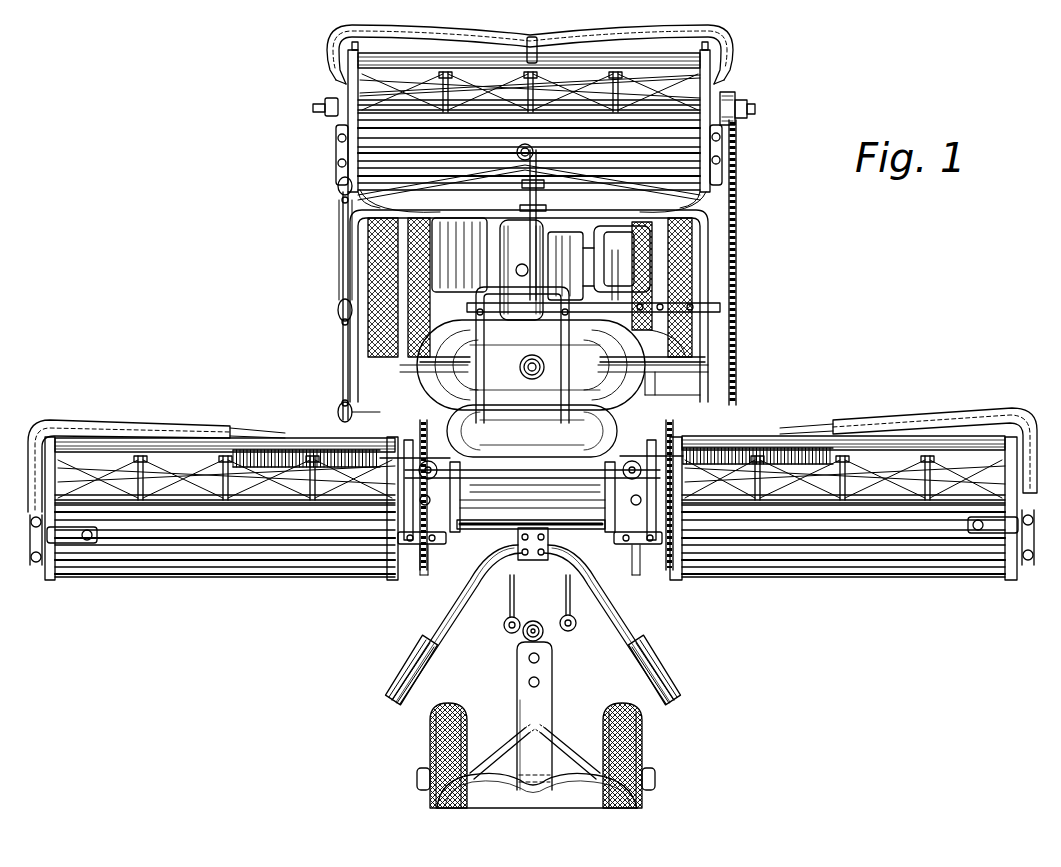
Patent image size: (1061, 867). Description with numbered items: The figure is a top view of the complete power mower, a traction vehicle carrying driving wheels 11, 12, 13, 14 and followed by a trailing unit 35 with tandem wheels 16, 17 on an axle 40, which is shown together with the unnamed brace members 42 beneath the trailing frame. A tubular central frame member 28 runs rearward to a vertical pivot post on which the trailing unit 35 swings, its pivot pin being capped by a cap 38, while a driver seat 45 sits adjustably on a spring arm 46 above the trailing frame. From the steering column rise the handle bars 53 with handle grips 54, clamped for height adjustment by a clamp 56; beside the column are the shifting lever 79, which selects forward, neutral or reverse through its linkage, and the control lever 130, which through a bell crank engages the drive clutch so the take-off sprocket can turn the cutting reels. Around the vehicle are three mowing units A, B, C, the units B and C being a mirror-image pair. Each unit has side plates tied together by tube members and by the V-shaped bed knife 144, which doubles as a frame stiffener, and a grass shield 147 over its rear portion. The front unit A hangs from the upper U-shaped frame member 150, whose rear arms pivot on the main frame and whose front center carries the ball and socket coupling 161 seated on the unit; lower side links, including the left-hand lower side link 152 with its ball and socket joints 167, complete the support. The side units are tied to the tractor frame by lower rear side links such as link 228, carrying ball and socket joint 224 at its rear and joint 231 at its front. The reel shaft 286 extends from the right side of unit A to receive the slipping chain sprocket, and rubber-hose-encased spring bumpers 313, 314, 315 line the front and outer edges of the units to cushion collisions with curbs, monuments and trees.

The bed knife 144 is at (330, 50).
The front mowing unit A is at (735, 82).
The mowing unit B is at (1003, 575).
The mowing unit C is at (88, 425).
The spring bumper 313 is at (728, 43).
The spring bumper 314 is at (1012, 408).
The spring bumper 315 is at (50, 418).
The reel shaft 286 is at (746, 101).
The ball and socket coupling 161 is at (530, 150).
The ball and socket joints 167 is at (335, 186).
The U-shaped frame member 150 is at (340, 225).
The left-hand lower side link 152 is at (352, 238).
The driving wheel 14 is at (378, 250).
The driving wheel 13 is at (414, 268).
The ball and socket joint 231 is at (338, 310).
The lower rear side link 228 is at (343, 333).
The ball and socket joint 224 is at (340, 405).
The driving wheel 11 is at (680, 325).
The driving wheel 12 is at (628, 335).
The grass shield 147 is at (942, 553).
The handle bars 53 is at (462, 605).
The handle grips 54 is at (407, 660).
The clamp 56 is at (512, 580).
The central frame member 28 is at (537, 603).
The shifting lever 79 is at (506, 616).
The control lever 130 is at (576, 625).
The cap 38 is at (545, 633).
The trailing unit 35 is at (650, 750).
The spring arm 46 is at (530, 698).
The tandem wheel 17 is at (448, 706).
The tandem wheel 16 is at (617, 706).
The driver seat 45 is at (465, 798).
The brace strut 42 is at (496, 749).
The axle 40 is at (560, 776).